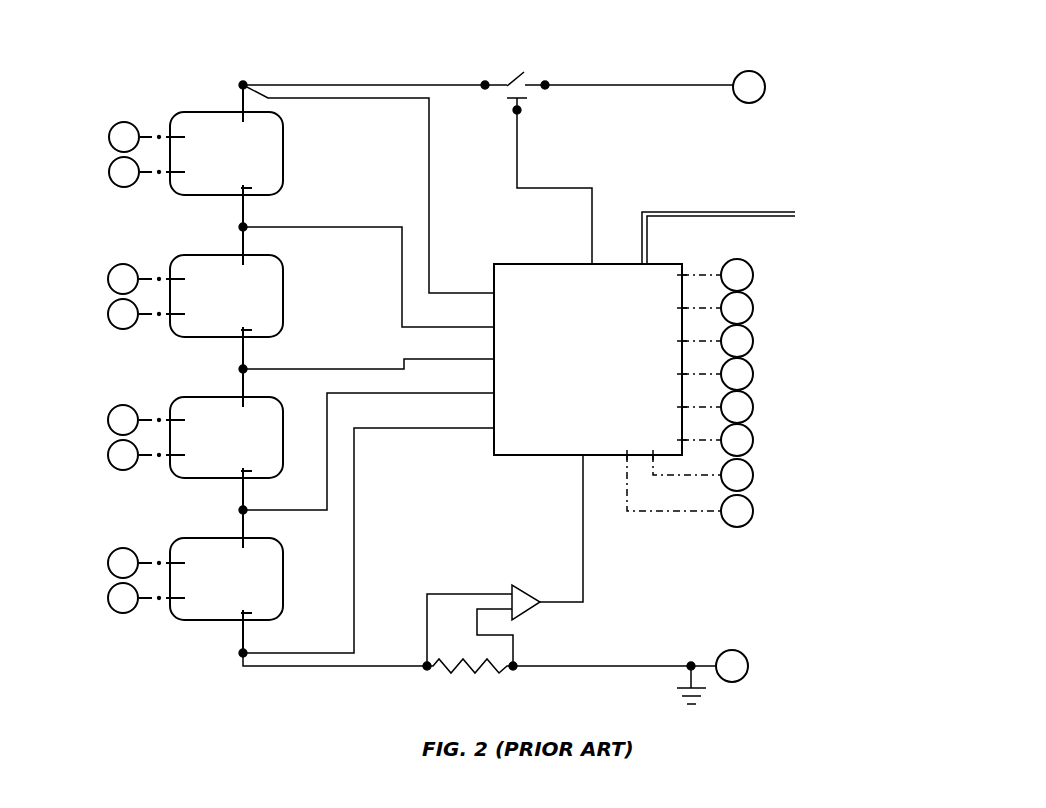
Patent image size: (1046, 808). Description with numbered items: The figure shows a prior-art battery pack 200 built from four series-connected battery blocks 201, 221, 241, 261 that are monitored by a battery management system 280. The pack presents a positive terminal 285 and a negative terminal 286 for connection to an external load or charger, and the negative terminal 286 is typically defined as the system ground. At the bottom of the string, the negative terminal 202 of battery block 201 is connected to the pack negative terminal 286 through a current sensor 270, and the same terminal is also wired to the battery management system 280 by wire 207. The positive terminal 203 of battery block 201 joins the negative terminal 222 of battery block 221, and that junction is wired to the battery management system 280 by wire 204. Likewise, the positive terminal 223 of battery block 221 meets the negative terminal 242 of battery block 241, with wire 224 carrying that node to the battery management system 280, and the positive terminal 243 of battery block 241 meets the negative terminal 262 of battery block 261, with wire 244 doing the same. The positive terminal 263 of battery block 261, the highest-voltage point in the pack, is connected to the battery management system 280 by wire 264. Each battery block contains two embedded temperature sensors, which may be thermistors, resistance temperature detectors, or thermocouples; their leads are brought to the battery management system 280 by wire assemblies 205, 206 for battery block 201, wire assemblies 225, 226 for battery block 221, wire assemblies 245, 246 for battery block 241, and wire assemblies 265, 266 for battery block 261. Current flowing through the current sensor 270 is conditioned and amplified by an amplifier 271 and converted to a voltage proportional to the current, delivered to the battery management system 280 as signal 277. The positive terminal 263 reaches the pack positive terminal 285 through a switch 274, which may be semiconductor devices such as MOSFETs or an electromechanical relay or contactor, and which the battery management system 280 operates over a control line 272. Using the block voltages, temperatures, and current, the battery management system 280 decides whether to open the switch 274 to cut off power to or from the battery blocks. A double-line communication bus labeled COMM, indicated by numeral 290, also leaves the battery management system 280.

The battery pack 200 is at (868, 371).
The battery block 201 is at (170, 619).
The negative terminal 202 is at (242, 646).
The positive terminal 203 is at (242, 532).
The wire 204 is at (327, 421).
The wire assembly 205 is at (108, 556).
The wire assembly 206 is at (108, 594).
The wire 207 is at (355, 576).
The battery block 221 is at (170, 476).
The negative terminal 222 is at (242, 503).
The positive terminal 223 is at (242, 390).
The wire 224 is at (392, 368).
The wire assembly 225 is at (108, 413).
The wire assembly 226 is at (108, 451).
The battery block 241 is at (170, 334).
The negative terminal 242 is at (242, 361).
The positive terminal 243 is at (242, 249).
The wire 244 is at (382, 224).
The wire assembly 245 is at (108, 272).
The wire assembly 246 is at (108, 310).
The battery block 261 is at (170, 192).
The negative terminal 262 is at (242, 219).
The positive terminal 263 is at (240, 102).
The wire 264 is at (428, 152).
The wire assembly 265 is at (108, 130).
The wire assembly 266 is at (108, 168).
The current sensor 270 is at (482, 669).
The amplifier 271 is at (510, 586).
The control line 272 is at (517, 170).
The switch 274 is at (509, 78).
The signal 277 is at (583, 524).
The battery management system 280 is at (530, 272).
The positive terminal 285 is at (738, 74).
The negative terminal 286 is at (722, 652).
The communication bus (COMM) 290 is at (690, 210).